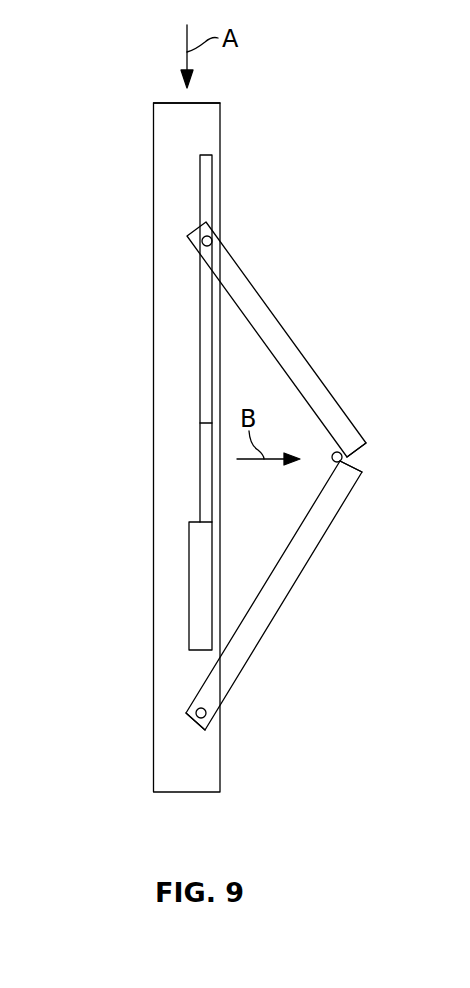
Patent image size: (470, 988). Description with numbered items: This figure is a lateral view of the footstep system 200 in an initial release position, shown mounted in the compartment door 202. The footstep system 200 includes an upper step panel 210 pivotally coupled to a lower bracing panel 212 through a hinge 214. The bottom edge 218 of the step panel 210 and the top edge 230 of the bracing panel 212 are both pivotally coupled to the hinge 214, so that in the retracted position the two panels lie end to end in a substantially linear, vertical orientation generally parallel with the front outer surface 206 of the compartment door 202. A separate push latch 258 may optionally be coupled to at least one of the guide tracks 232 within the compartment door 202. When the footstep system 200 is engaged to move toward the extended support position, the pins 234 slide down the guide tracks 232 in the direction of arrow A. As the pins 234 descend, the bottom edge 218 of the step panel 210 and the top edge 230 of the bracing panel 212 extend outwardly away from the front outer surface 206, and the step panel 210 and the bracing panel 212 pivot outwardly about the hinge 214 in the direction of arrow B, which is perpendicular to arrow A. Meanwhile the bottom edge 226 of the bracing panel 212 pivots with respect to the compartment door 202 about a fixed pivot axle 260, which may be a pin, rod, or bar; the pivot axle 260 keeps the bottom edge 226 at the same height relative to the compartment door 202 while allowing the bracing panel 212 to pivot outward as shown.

The footstep system 200 is at (322, 322).
The compartment door 202 is at (165, 467).
The front outer surface 206 is at (220, 119).
The step panel 210 is at (258, 288).
The bracing panel 212 is at (340, 518).
The hinge 214 is at (342, 442).
The bottom edge 218 is at (367, 441).
The bottom edge 226 is at (206, 714).
The top edge 230 is at (362, 472).
The guide tracks 232 is at (205, 173).
The pins 234 is at (218, 240).
The push latch 258 is at (200, 602).
The fixed pivot axle 260 is at (214, 714).